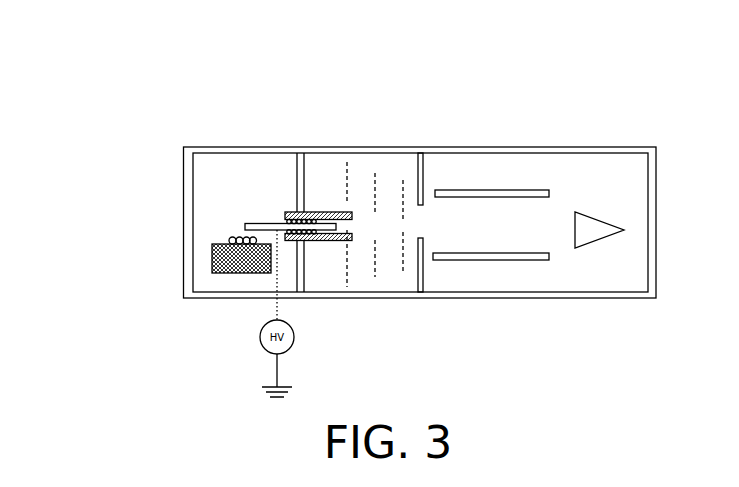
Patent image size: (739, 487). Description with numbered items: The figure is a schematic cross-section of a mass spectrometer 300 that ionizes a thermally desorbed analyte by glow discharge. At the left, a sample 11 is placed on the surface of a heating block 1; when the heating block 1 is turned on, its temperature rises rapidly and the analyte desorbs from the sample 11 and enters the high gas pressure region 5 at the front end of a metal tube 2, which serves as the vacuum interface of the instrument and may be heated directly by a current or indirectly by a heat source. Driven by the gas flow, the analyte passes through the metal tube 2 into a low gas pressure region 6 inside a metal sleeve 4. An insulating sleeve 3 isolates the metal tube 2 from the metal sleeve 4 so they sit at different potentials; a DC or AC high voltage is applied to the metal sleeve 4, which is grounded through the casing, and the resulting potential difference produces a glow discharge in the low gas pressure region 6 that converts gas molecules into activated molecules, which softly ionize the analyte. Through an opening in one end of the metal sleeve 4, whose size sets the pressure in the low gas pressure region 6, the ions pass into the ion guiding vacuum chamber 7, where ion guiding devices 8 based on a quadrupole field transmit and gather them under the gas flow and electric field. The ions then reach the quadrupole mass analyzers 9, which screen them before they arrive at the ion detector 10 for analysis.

The mass spectrometer 300 is at (177, 82).
The heating block 1 is at (227, 273).
The metal tube 2 is at (258, 223).
The insulating sleeve 3 is at (296, 212).
The metal sleeve 4 is at (318, 240).
The high gas pressure region 5 is at (208, 205).
The low gas pressure region 6 is at (342, 227).
The ion guiding vacuum chamber 7 is at (382, 160).
The ion guiding devices 8 is at (405, 268).
The quadrupole mass analyzers 9 is at (512, 260).
The ion detector 10 is at (590, 243).
The sample 11 is at (230, 235).